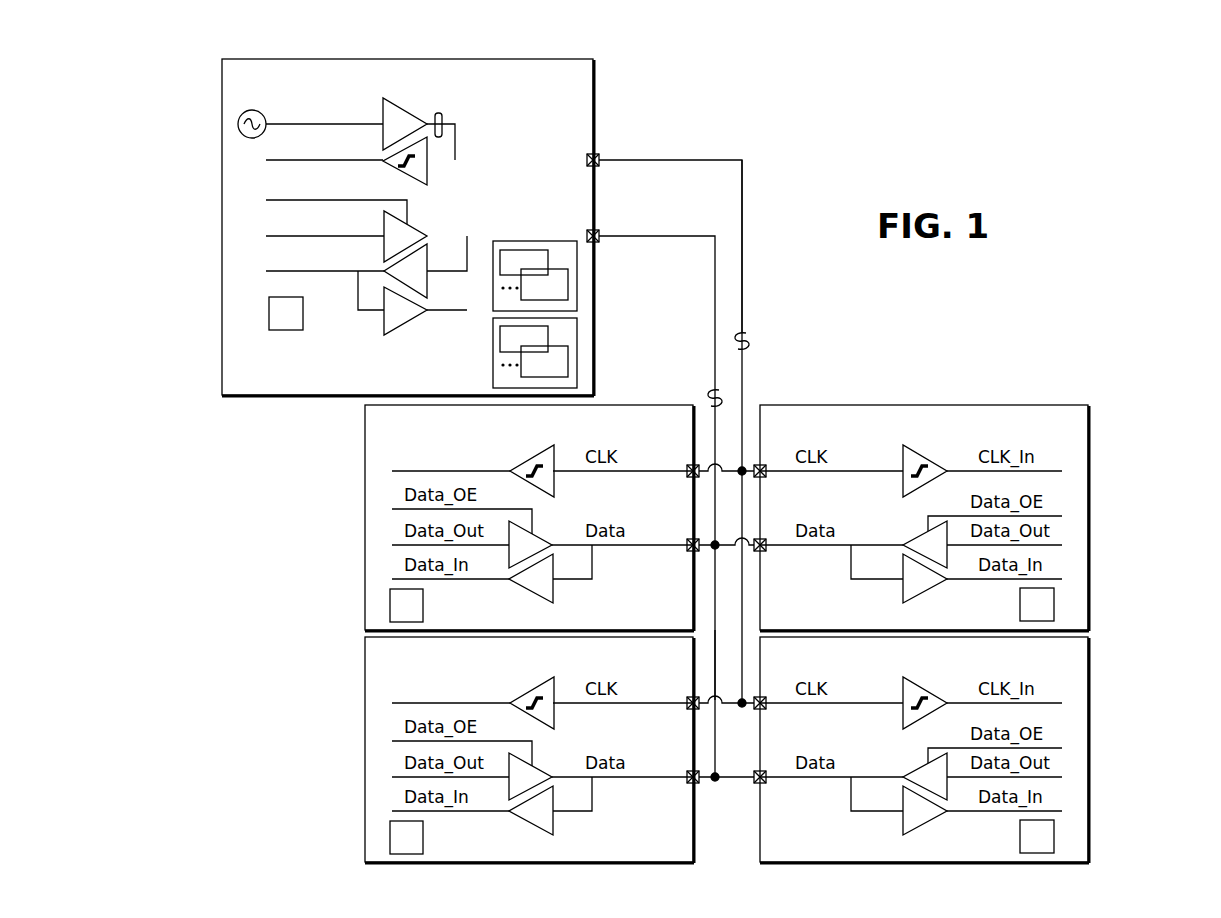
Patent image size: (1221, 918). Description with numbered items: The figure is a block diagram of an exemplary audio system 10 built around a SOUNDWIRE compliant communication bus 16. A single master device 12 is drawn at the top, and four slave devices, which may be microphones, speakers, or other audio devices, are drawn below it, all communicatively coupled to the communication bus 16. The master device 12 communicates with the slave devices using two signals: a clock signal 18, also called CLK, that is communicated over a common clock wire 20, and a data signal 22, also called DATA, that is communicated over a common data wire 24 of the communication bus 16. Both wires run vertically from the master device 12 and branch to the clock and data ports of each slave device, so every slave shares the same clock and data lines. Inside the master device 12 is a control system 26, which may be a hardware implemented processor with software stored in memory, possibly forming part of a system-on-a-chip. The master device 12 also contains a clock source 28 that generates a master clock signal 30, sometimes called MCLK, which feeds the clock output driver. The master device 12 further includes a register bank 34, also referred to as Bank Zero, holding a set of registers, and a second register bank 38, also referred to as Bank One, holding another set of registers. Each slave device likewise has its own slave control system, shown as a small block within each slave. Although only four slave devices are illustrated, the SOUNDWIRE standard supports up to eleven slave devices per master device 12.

The audio system 10 is at (1062, 250).
The master device 12 is at (410, 227).
The communication bus 16 is at (766, 130).
The clock signal 18 is at (752, 347).
The common clock wire 20 is at (742, 221).
The data signal 22 is at (725, 405).
The common data wire 24 is at (715, 672).
The control system 26 is at (269, 318).
The clock source 28 is at (238, 124).
The master clock signal 30 is at (440, 112).
The register bank 34 is at (577, 296).
The register bank 38 is at (577, 376).